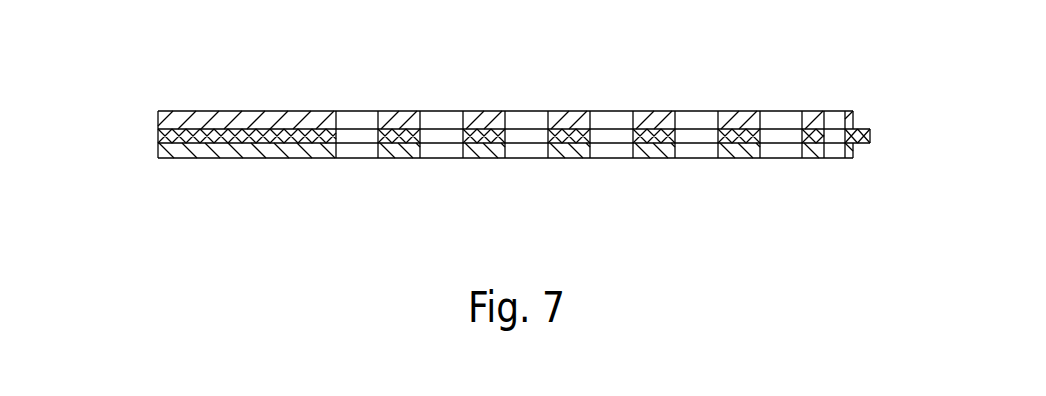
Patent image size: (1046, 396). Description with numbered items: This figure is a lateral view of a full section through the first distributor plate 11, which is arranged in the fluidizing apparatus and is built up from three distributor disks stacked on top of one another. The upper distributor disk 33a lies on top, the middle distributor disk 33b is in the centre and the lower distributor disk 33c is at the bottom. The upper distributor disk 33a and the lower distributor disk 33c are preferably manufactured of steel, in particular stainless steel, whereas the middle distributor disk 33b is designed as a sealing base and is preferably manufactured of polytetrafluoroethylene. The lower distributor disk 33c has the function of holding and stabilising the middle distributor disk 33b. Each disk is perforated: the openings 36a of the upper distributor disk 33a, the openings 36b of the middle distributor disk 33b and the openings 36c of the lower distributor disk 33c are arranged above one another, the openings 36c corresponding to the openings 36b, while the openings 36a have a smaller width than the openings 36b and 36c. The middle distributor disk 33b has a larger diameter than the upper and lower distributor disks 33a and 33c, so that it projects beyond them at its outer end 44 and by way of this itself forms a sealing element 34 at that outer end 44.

The first distributor plate 11 is at (265, 235).
The upper distributor disk 33a is at (165, 120).
The middle distributor disk 33b is at (161, 137).
The lower distributor disk 33c is at (160, 153).
The openings of the upper distributor disk 36a is at (690, 113).
The openings of the middle distributor disk 36b is at (775, 137).
The openings of the lower distributor disk 36c is at (698, 152).
The outer end 44 is at (868, 123).
The sealing element 34 is at (870, 142).